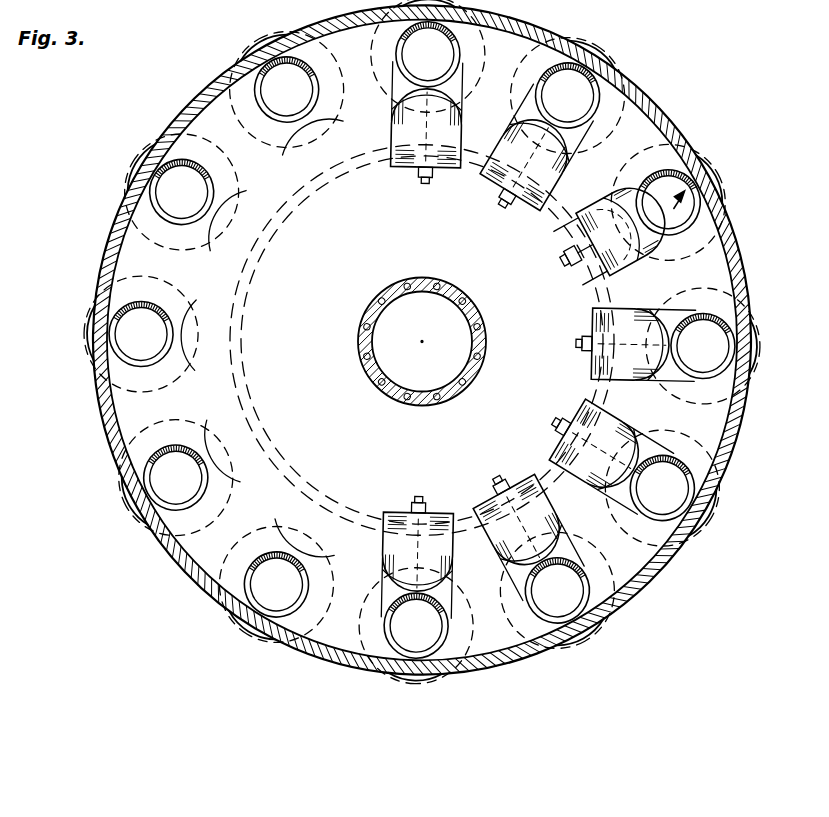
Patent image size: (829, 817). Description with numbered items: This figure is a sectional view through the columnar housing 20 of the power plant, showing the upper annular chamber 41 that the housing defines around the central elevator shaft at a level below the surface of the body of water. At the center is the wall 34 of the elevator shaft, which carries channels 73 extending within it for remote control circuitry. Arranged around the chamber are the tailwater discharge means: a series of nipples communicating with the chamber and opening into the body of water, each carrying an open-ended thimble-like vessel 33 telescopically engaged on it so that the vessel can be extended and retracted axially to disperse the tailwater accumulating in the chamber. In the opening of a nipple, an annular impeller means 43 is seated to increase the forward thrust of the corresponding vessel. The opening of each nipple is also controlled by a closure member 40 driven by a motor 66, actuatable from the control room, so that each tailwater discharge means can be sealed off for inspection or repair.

The columnar housing 20 is at (276, 233).
The thimble-like vessel 33 is at (595, 56).
The wall of the elevator shaft 34 is at (486, 357).
The closure member 40 is at (560, 190).
The upper annular chamber 41 is at (300, 364).
The annular impeller means 43 is at (263, 116).
The motor 66 is at (565, 270).
The channels 73 is at (453, 290).